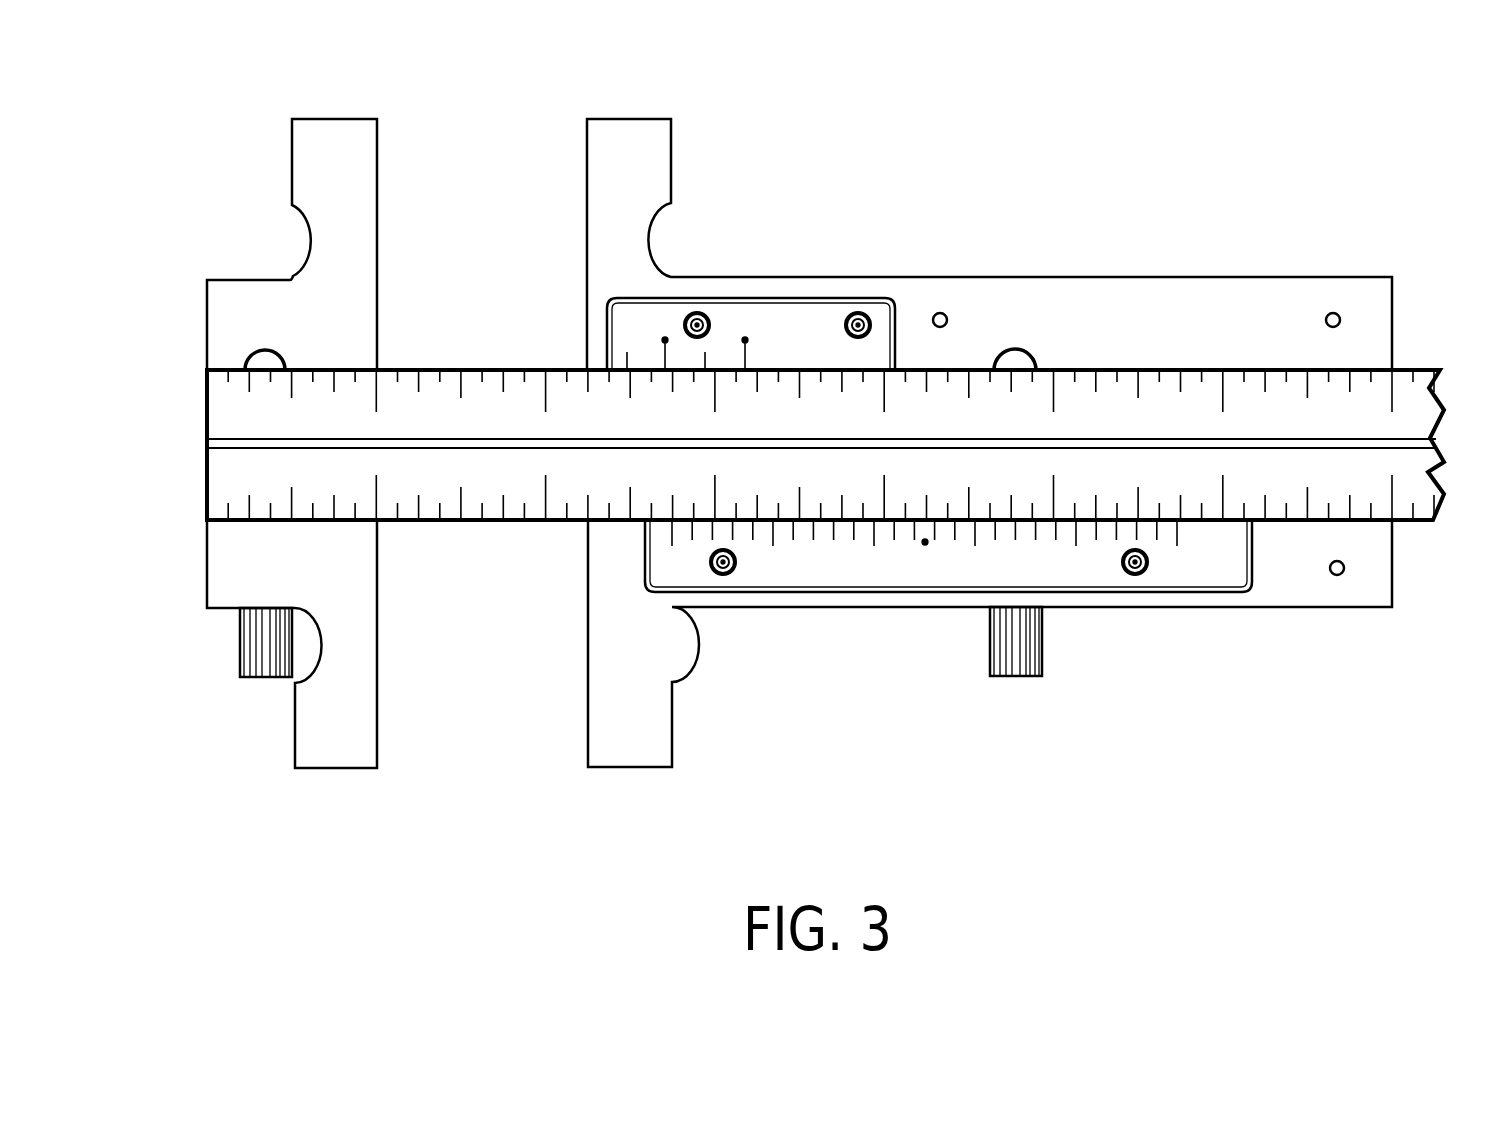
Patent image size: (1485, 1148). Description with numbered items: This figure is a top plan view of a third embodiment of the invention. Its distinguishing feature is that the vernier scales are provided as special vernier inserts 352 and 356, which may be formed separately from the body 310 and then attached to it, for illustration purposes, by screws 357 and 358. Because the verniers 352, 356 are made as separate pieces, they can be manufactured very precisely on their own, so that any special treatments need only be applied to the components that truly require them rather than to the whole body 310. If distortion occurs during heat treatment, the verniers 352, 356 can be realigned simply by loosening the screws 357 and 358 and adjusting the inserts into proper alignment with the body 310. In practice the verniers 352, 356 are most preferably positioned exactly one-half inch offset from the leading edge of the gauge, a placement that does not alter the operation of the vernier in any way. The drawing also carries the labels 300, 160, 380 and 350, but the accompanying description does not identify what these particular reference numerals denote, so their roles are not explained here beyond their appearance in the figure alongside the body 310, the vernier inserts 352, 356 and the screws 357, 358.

The caliper gauge 300 is at (1275, 118).
The scale beam 160 is at (463, 464).
The fixed jaw 380 is at (353, 213).
The body 310 is at (1058, 292).
The vernier insert 356 is at (747, 358).
The screw 358 is at (700, 318).
The vernier insert 352 is at (828, 572).
The vernier scale plate 350 is at (675, 535).
The screw 357 is at (1140, 570).